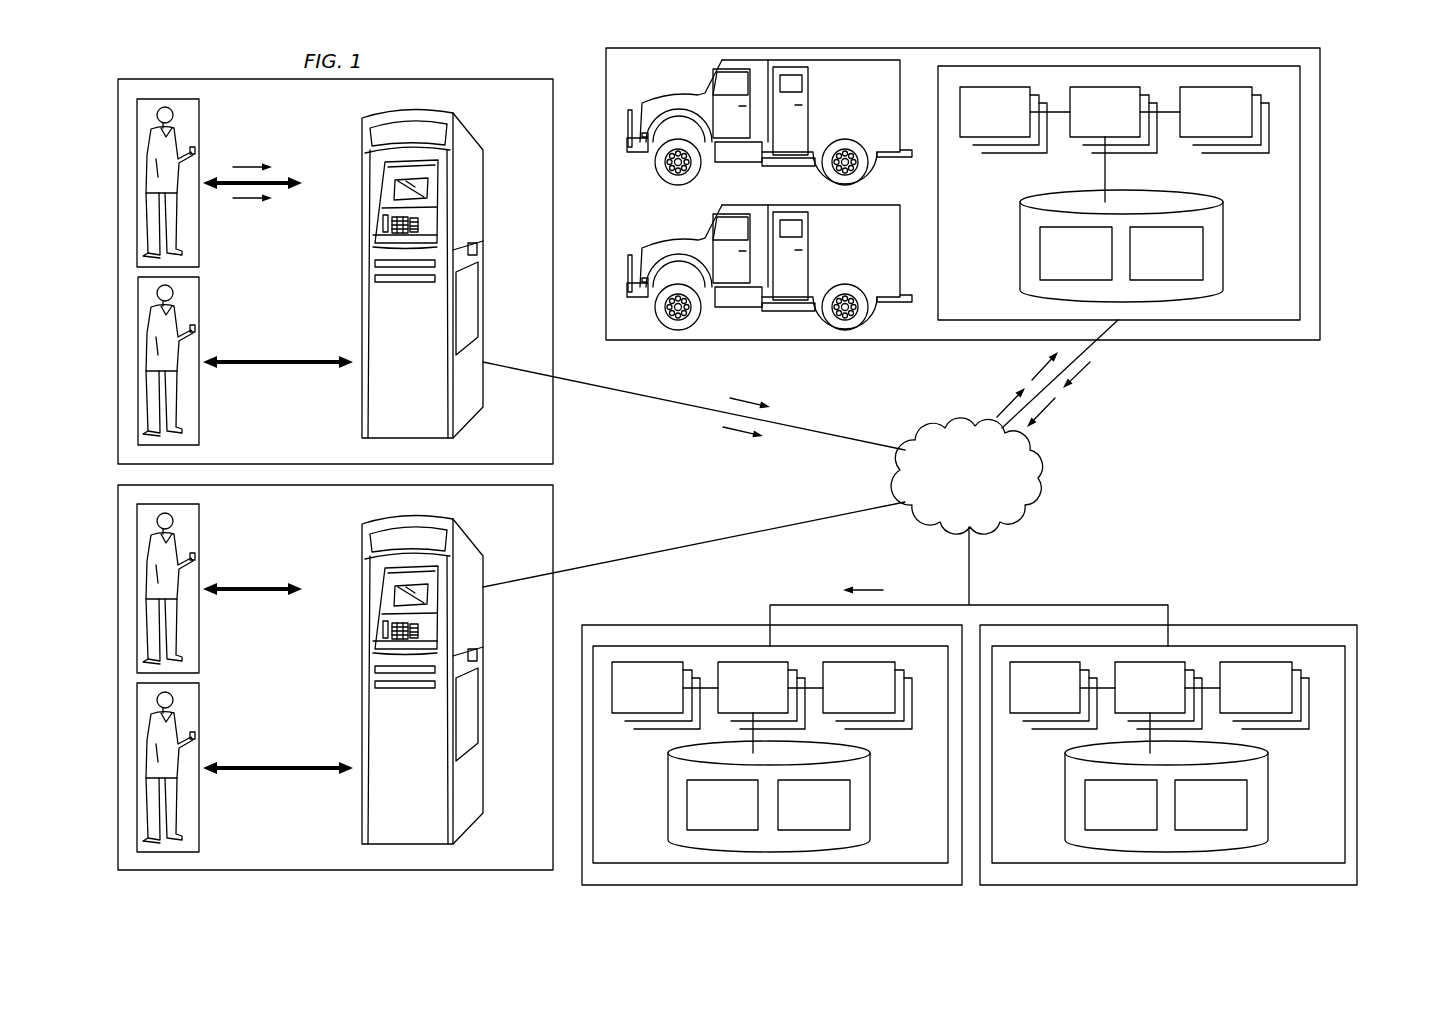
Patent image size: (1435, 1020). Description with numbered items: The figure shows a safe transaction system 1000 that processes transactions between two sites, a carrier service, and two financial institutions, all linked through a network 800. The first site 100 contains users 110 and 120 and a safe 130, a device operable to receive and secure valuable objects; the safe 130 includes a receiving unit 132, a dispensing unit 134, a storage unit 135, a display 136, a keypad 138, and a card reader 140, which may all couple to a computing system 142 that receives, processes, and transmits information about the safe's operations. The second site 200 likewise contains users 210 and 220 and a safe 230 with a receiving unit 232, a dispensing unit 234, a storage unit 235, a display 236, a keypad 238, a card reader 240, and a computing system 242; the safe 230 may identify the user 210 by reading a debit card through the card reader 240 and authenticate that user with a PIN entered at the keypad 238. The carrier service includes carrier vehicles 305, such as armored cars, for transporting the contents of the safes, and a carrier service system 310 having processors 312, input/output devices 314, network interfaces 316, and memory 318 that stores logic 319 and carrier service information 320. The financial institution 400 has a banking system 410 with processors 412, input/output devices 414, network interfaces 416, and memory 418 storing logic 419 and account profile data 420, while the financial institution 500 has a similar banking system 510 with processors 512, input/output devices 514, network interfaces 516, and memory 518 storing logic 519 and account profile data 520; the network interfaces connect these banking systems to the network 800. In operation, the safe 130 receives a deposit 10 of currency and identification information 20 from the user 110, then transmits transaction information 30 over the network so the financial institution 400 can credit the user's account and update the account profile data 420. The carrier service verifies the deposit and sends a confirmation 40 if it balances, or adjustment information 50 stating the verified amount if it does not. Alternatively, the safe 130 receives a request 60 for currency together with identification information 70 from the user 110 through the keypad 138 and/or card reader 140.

The deposit 10 is at (251, 188).
The identification information 20 is at (252, 165).
The transaction information 30 is at (745, 396).
The confirmation 40 is at (1082, 376).
The adjustment information 50 is at (867, 589).
The request 60 is at (250, 201).
The identification information 70 is at (737, 437).
The site 100 is at (565, 431).
The user 110 is at (201, 108).
The user 120 is at (201, 405).
The safe 130 is at (470, 133).
The receiving unit 132 is at (375, 263).
The dispensing unit 134 is at (402, 283).
The storage unit 135 is at (479, 300).
The display 136 is at (395, 188).
The keypad 138 is at (392, 215).
The card reader 140 is at (383, 222).
The computing system 142 is at (478, 249).
The site 200 is at (567, 516).
The user 210 is at (201, 514).
The user 220 is at (201, 810).
The safe 230 is at (426, 669).
The receiving unit 232 is at (372, 668).
The dispensing unit 234 is at (405, 710).
The storage unit 235 is at (499, 714).
The display 236 is at (368, 590).
The keypad 238 is at (363, 619).
The card reader 240 is at (348, 634).
The computing system 242 is at (504, 649).
The carrier vehicle 305 is at (662, 100).
The carrier service system 310 is at (956, 291).
The processors 312 is at (1086, 123).
The input/output devices 314 is at (976, 123).
The network interfaces 316 is at (1197, 123).
The memory 318 is at (1226, 247).
The logic 319 is at (1057, 264).
The carrier service information 320 is at (1147, 264).
The financial institution 400 is at (702, 615).
The banking system 410 is at (609, 850).
The processors 412 is at (734, 699).
The input/output devices 414 is at (840, 699).
The network interfaces 416 is at (628, 699).
The memory 418 is at (873, 798).
The logic 419 is at (703, 818).
The account profile data 420 is at (795, 818).
The financial institution 500 is at (1237, 615).
The banking system 510 is at (1011, 850).
The processors 512 is at (1131, 699).
The input/output devices 514 is at (1026, 699).
The network interfaces 516 is at (1237, 699).
The memory 518 is at (1271, 798).
The logic 519 is at (1102, 818).
The account profile data 520 is at (1192, 818).
The network 800 is at (949, 490).
The safe transaction system 1000 is at (1336, 118).